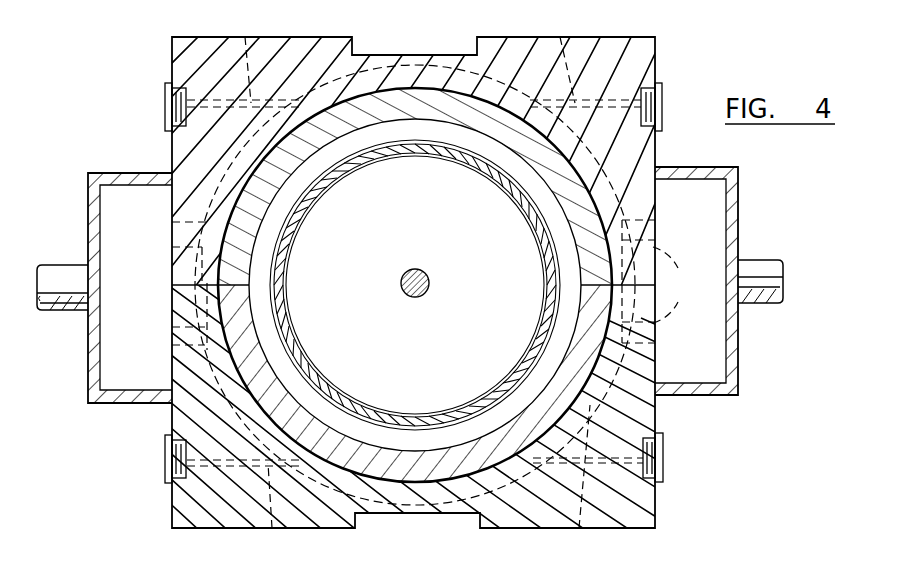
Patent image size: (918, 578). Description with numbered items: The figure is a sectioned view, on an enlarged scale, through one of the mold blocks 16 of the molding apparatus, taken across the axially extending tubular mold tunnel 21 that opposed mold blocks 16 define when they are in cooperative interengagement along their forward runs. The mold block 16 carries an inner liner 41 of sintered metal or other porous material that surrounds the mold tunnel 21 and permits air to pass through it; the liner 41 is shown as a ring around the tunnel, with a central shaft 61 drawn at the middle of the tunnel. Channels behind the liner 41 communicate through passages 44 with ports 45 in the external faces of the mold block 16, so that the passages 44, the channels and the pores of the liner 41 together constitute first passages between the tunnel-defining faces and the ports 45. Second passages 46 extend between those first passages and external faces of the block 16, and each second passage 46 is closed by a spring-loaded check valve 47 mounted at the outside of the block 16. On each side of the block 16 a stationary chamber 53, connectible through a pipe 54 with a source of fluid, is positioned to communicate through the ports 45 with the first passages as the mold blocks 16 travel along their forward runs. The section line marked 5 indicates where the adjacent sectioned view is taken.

The section line 5- 5 is at (135, 107).
The mold block 16 is at (437, 50).
The tubular mold tunnel 21 is at (414, 370).
The inner liner 41 is at (252, 352).
The passage 44 is at (172, 264).
The port 45 is at (172, 226).
The second passage 46 is at (250, 40).
The spring-loaded check valve 47 is at (164, 86).
The stationary chamber 53 is at (92, 366).
The pipe 54 is at (75, 298).
The shaft 61 is at (429, 288).